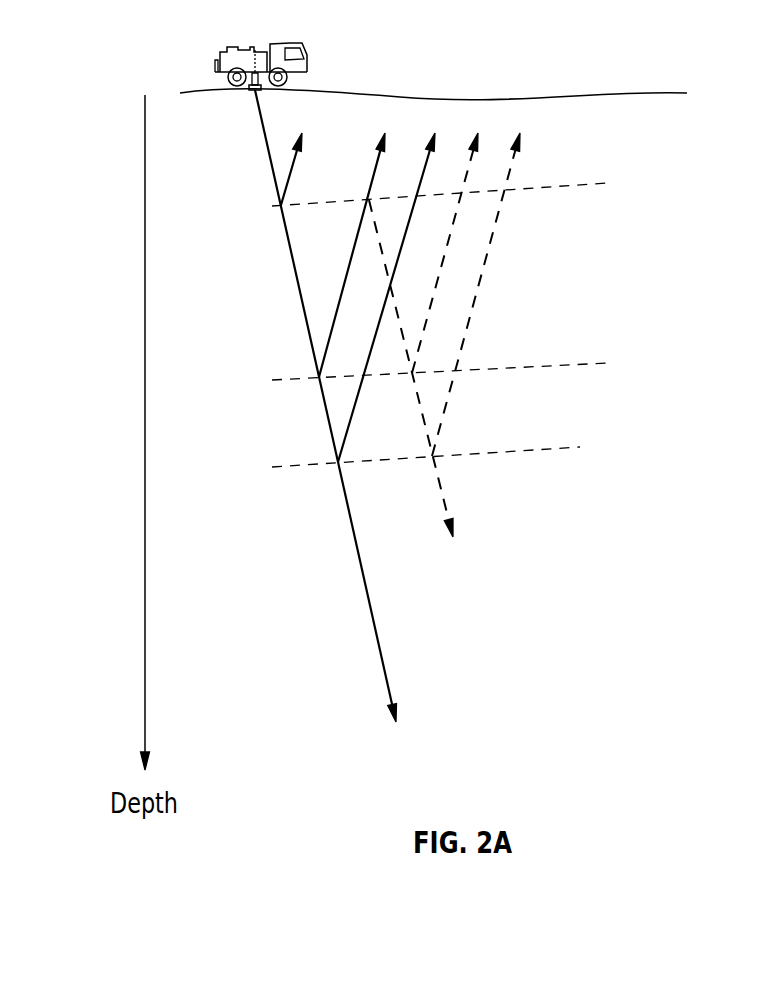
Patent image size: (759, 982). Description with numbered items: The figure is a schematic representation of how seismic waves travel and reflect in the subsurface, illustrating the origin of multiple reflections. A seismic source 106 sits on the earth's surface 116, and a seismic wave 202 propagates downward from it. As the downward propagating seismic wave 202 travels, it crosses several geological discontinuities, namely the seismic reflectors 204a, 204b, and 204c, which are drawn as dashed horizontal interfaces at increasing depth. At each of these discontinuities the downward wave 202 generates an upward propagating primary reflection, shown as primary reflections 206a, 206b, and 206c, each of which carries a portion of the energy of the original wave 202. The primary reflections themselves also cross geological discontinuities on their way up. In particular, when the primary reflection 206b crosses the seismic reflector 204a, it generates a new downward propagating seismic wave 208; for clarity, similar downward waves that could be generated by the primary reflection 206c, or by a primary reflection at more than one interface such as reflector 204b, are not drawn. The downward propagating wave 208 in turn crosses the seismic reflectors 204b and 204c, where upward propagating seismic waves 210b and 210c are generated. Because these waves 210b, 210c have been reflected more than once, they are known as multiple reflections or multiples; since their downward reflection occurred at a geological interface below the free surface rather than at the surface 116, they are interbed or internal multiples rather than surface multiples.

The seismic source 106 is at (288, 43).
The earth's surface 116 is at (558, 92).
The downward propagating seismic wave 202 is at (373, 630).
The seismic reflector 204a is at (590, 184).
The seismic reflector 204b is at (590, 364).
The seismic reflector 204c is at (563, 446).
The primary reflection 206a is at (287, 178).
The primary reflection 206b is at (332, 337).
The primary reflection 206c is at (350, 428).
The downward propagating seismic wave 208 is at (437, 293).
The upward propagating seismic wave 210b is at (457, 220).
The upward propagating seismic wave 210c is at (483, 273).